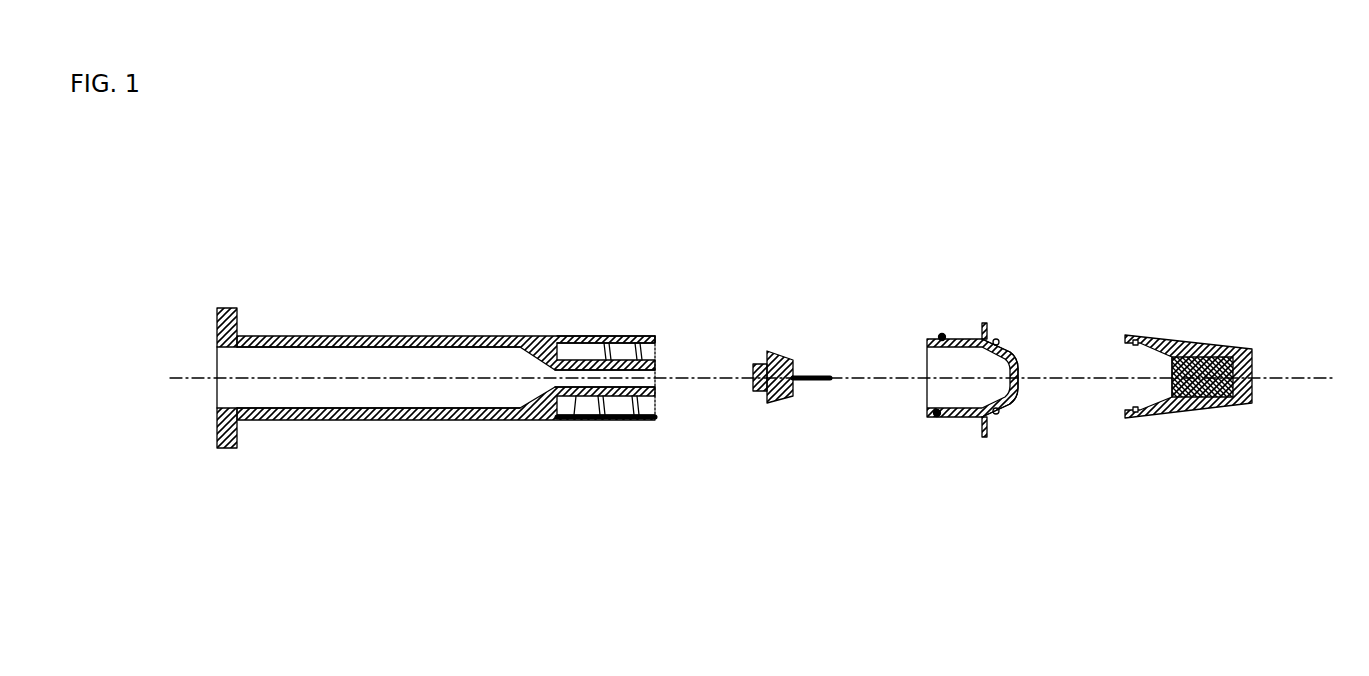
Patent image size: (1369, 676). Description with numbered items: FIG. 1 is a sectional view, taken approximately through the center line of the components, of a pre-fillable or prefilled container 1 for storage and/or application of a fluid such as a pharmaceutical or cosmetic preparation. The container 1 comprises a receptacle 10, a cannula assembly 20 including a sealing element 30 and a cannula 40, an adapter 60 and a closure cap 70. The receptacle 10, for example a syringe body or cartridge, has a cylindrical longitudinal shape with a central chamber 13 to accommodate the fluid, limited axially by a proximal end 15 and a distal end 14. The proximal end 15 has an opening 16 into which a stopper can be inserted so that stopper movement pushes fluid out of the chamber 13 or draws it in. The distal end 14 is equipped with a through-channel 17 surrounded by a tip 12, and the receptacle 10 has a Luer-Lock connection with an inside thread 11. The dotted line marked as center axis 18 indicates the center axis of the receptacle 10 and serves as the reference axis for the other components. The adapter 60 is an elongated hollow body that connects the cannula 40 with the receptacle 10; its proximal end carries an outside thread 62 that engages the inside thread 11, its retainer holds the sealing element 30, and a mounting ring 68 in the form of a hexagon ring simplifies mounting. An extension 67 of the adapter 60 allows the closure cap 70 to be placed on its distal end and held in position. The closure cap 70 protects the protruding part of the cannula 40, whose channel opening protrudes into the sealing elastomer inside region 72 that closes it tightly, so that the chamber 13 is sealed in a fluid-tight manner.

The pre-fillable or prefilled container 1 is at (500, 173).
The receptacle 10 is at (447, 397).
The inside thread 11 is at (578, 398).
The tip 12 is at (618, 338).
The chamber 13 is at (435, 365).
The distal end 14 is at (665, 391).
The proximal end 15 is at (210, 408).
The opening 16 is at (262, 385).
The through-channel 17 is at (610, 380).
The center axis 18 is at (215, 378).
The cannula assembly 20 is at (792, 333).
The sealing element 30 is at (778, 403).
The cannula 40 is at (832, 385).
The adapter 60 is at (988, 448).
The outside thread 62 is at (942, 337).
The extension 67 is at (1018, 340).
The mounting ring 68 is at (970, 340).
The closure cap 70 is at (1165, 410).
The elastomer inside region 72 is at (1200, 365).